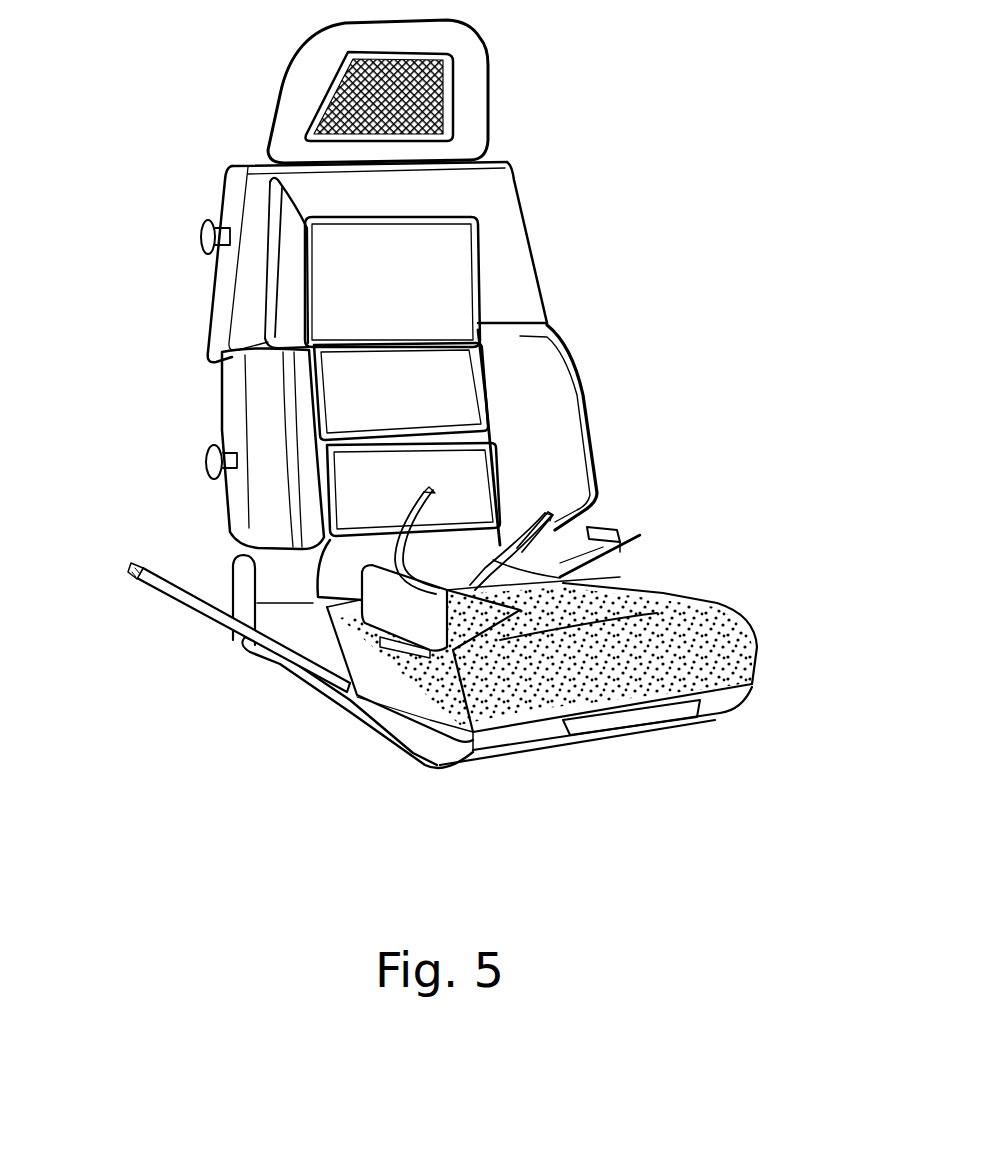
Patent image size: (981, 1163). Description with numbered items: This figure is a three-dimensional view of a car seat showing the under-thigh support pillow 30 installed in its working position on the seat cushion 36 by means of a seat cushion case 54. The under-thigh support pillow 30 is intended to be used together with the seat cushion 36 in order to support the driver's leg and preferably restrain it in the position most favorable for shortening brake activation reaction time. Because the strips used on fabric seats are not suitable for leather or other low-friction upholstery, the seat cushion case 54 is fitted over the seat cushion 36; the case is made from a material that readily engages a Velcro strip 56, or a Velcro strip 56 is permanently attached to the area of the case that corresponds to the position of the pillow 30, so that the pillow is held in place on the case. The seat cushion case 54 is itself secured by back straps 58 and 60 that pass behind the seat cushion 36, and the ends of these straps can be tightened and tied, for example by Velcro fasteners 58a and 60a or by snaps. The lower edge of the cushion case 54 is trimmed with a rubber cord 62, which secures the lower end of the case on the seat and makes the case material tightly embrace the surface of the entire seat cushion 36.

The under-thigh support pillow 30 is at (443, 582).
The seat cushion 36 is at (305, 687).
The seat cushion case 54 is at (653, 595).
The Velcro strip 56 is at (390, 643).
The back strap 58 is at (207, 607).
The Velcro fastener 58a is at (134, 560).
The back strap 60 is at (641, 533).
The Velcro fastener 60a is at (616, 529).
The rubber cord 62 is at (565, 722).